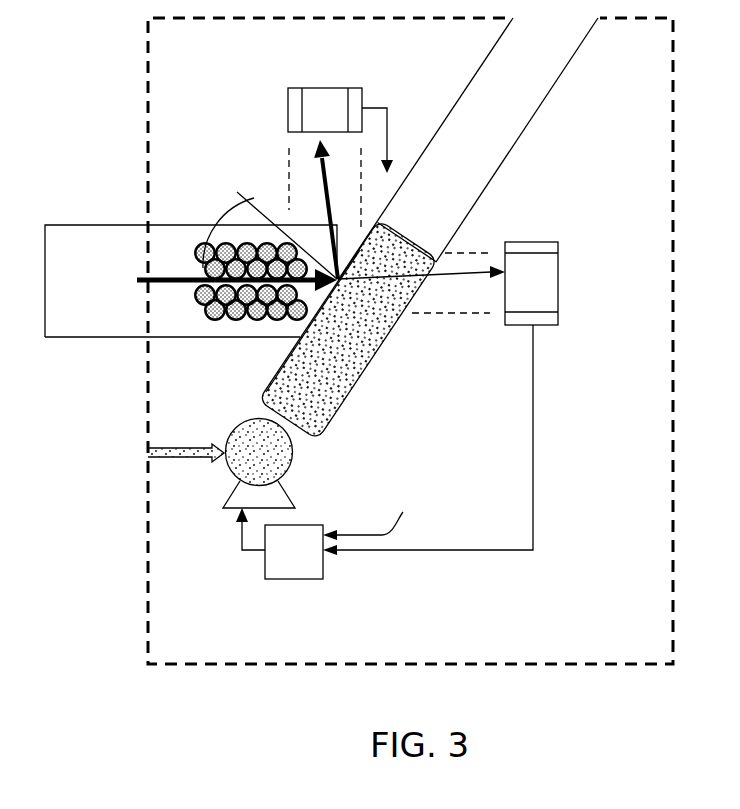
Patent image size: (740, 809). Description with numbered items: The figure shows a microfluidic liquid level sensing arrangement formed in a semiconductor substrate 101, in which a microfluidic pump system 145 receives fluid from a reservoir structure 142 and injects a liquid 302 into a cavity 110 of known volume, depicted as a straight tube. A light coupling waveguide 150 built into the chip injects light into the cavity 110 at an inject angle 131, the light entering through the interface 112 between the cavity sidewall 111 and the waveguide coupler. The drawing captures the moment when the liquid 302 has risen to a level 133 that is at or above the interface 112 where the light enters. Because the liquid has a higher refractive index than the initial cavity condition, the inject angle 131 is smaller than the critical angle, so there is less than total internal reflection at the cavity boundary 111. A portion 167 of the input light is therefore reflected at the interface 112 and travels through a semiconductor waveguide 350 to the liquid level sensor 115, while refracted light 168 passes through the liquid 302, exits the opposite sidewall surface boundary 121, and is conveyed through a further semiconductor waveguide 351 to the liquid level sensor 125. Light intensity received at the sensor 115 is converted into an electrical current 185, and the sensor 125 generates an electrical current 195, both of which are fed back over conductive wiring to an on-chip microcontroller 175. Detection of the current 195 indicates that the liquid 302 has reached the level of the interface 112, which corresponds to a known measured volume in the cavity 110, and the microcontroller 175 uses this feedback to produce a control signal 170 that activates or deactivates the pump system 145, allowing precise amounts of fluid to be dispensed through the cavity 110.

The semiconductor substrate 101 is at (620, 612).
The cavity 110 is at (256, 402).
The cavity sidewall 111 is at (266, 381).
The interface 112 is at (355, 295).
The liquid level sensor 115 is at (288, 108).
The sidewall surface boundary 121 is at (528, 123).
The liquid level sensor 125 is at (558, 280).
The inject angle 131 is at (199, 224).
The liquid level 133 is at (421, 229).
The reservoir structure 142 is at (190, 458).
The microfluidic pump system 145 is at (280, 483).
The light coupling waveguide 150 is at (95, 200).
The reflected light portion 167 is at (324, 207).
The refracted light 168 is at (450, 275).
The control signal 170 is at (242, 536).
The microcontroller 175 is at (292, 580).
The electrical current 185 is at (375, 108).
The electrical current 195 is at (533, 397).
The liquid 302 is at (337, 372).
The semiconductor waveguide 350 is at (300, 153).
The semiconductor waveguide 351 is at (475, 302).